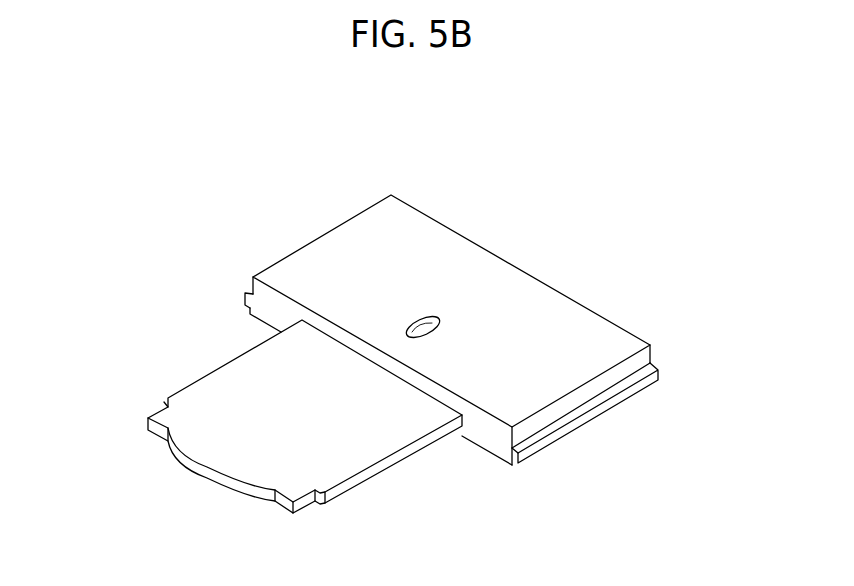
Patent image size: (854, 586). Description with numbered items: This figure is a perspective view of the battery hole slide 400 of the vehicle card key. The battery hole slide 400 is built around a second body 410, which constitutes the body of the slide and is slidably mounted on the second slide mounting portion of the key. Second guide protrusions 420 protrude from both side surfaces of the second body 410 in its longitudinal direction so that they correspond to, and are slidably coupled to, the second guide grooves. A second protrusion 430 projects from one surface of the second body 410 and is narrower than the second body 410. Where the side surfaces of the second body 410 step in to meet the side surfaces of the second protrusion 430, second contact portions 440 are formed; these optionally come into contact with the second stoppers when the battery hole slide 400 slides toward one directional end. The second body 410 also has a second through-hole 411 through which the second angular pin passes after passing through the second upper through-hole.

The battery hole slide 400 is at (597, 222).
The second body 410 is at (453, 257).
The second through-hole 411 is at (422, 323).
The second guide protrusions 420 is at (245, 295).
The second protrusion 430 is at (207, 450).
The second contact portions 440 is at (277, 317).